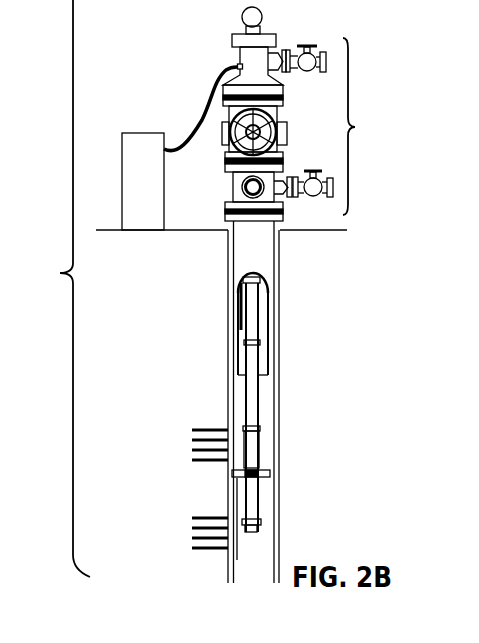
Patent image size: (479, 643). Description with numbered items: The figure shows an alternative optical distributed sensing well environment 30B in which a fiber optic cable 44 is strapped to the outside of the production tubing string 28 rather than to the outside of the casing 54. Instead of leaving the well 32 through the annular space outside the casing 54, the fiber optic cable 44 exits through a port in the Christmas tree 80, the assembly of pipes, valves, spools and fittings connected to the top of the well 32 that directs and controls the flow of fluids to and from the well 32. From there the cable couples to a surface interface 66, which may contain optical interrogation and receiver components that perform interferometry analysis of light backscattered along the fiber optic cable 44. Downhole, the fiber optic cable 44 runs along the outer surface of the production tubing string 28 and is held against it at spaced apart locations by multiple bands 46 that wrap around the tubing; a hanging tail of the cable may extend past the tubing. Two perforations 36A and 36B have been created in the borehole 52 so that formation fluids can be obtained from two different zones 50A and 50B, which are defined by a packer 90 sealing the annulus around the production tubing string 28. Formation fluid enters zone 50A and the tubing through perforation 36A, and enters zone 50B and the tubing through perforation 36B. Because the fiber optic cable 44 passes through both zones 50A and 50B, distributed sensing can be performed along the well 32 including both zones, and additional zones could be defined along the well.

The optical distributed sensing well environment 30B is at (52, 288).
The Christmas tree 80 is at (362, 126).
The well 32 is at (205, 209).
The fiber optic cable 44 is at (205, 113).
The surface interface 66 is at (122, 200).
The borehole 52 is at (227, 263).
The casing 54 is at (277, 268).
The bands 46 is at (268, 285).
The zone 50A is at (237, 393).
The production tubing string 28 is at (262, 450).
The packer 90 is at (268, 477).
The zone 50B is at (237, 493).
The perforation 36A is at (187, 425).
The perforation 36B is at (187, 513).